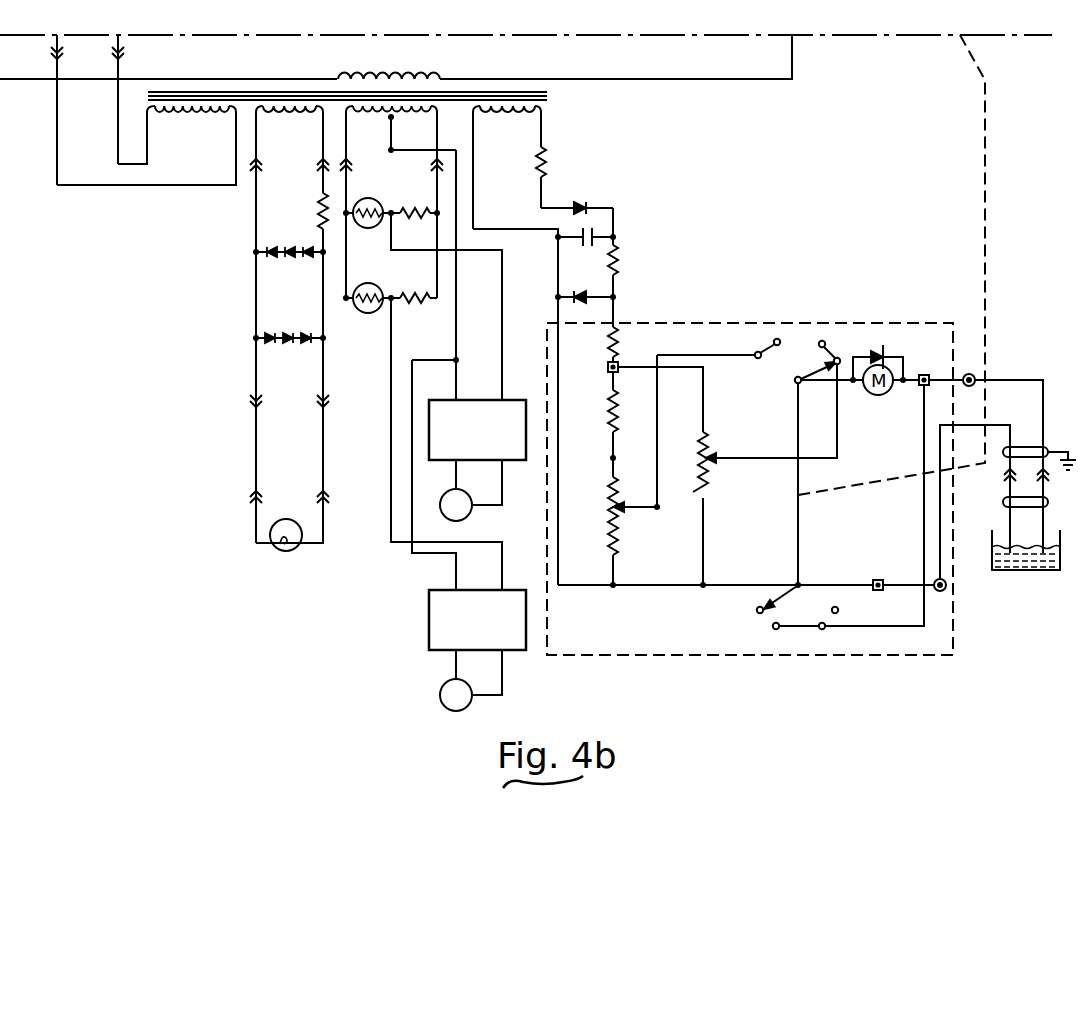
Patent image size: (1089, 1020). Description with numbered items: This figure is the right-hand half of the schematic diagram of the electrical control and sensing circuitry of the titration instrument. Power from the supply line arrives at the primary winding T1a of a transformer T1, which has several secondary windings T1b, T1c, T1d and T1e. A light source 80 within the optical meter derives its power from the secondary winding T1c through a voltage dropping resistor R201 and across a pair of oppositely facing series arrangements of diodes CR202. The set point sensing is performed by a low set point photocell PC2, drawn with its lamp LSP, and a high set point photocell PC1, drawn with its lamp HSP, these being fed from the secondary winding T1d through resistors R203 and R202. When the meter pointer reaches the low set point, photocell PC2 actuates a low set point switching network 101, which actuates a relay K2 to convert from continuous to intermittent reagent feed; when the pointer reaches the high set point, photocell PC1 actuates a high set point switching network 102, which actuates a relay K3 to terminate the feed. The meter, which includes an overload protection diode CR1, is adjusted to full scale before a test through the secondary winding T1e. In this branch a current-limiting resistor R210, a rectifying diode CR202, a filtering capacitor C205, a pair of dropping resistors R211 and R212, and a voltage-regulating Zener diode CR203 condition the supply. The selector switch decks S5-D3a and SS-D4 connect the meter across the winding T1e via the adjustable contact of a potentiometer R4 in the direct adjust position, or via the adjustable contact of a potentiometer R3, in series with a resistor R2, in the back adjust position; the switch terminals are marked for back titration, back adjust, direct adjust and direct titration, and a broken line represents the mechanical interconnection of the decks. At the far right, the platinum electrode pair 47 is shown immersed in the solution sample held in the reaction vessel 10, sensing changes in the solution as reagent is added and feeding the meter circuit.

The transformer T1 is at (556, 97).
The primary winding T1a is at (418, 78).
The secondary winding T1b is at (187, 118).
The secondary winding T1c is at (286, 118).
The secondary winding T1d is at (388, 119).
The secondary winding T1e is at (510, 118).
The voltage dropping resistor R201 is at (318, 209).
The resistor R202 is at (416, 307).
The resistor R203 is at (416, 212).
The current-limiting resistor R210 is at (548, 164).
The dropping resistor R211 is at (622, 264).
The dropping resistor R212 is at (620, 346).
The resistor R2 is at (606, 416).
The potentiometer R3 is at (606, 498).
The potentiometer R4 is at (708, 448).
The filtering capacitor C205 is at (595, 236).
The rectifying diode CR202 is at (284, 282).
The voltage-regulating Zener diode CR203 is at (595, 299).
The meter overload protection diode CR1 is at (886, 352).
The high set point photocell PC1 is at (360, 314).
The low set point photocell PC2 is at (376, 228).
The low set point lamp LSP is at (371, 219).
The high set point lamp HSP is at (368, 312).
The low set point switching network 101 is at (476, 400).
The high set point switching network 102 is at (429, 616).
The relay K2 is at (471, 490).
The relay K3 is at (471, 680).
The light source 80 is at (288, 554).
The selector switch deck S5-D3a is at (758, 356).
The selector switch deck SS-D4 is at (778, 616).
The platinum electrode pair 47 is at (1042, 521).
The reaction vessel 10 is at (1060, 538).